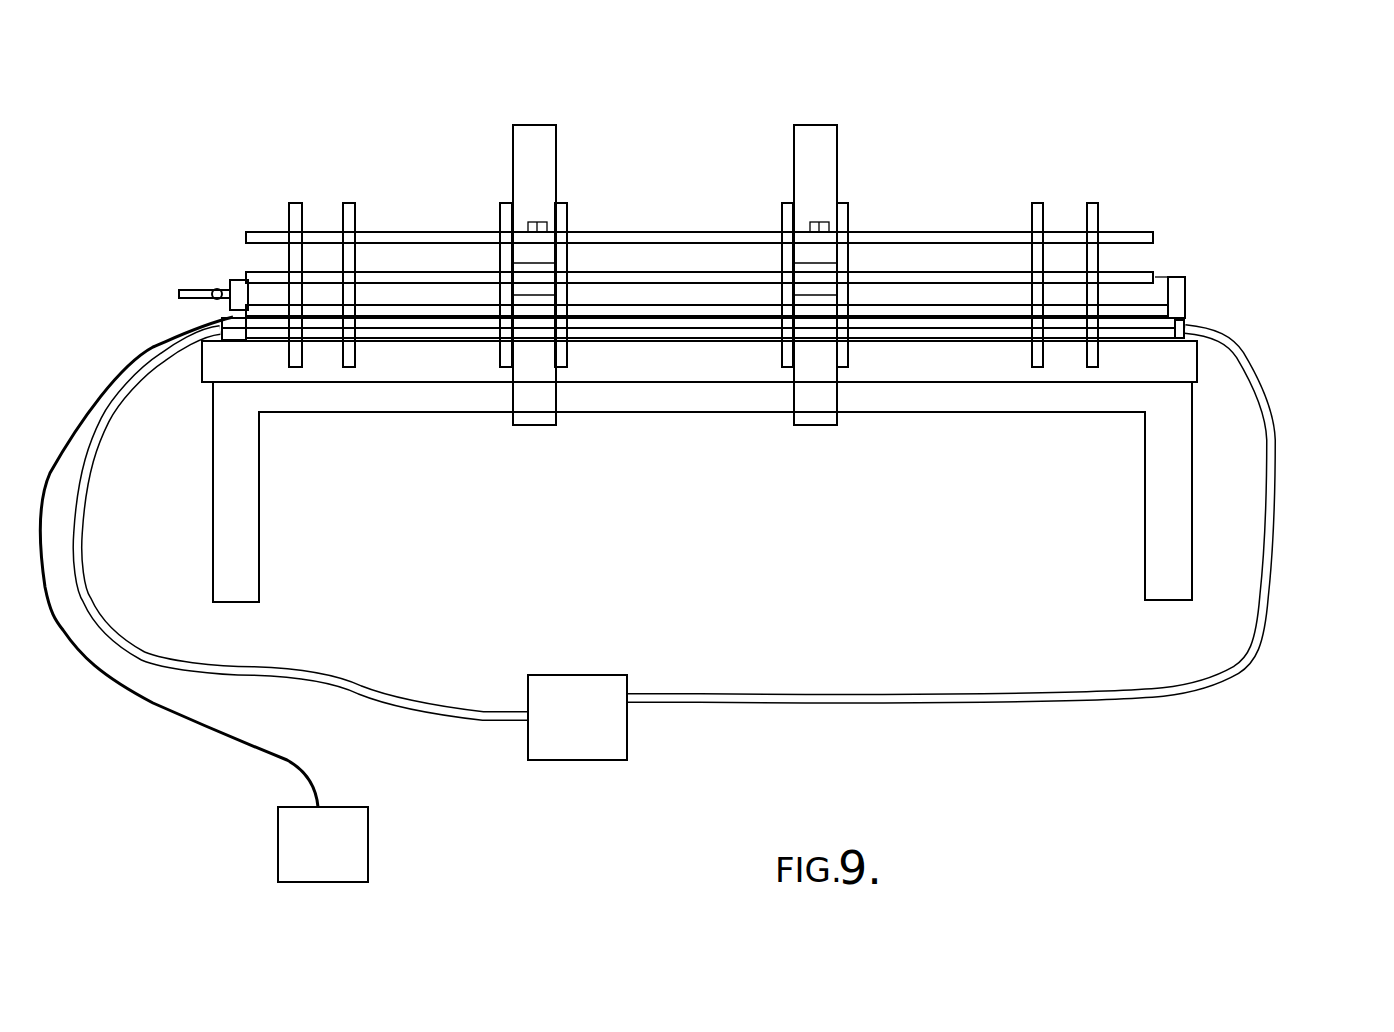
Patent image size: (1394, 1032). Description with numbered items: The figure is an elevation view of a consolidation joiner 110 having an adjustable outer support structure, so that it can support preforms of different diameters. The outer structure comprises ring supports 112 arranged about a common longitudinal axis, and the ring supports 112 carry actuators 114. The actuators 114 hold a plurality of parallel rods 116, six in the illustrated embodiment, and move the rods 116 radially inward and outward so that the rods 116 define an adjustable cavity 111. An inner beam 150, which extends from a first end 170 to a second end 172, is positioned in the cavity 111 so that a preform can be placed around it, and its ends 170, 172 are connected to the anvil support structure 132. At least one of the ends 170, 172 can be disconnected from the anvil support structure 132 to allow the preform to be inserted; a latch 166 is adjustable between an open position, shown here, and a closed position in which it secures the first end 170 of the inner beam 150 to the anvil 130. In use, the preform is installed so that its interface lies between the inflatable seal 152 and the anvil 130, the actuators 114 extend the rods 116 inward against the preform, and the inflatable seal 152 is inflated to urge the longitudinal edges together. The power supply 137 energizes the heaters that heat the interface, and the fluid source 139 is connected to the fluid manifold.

The consolidation joiner 110 is at (168, 128).
The adjustable cavity 111 is at (433, 266).
The ring supports 112 is at (296, 203).
The actuators 114 is at (538, 124).
The rods 116 is at (1150, 327).
The anvil 130 is at (1190, 317).
The anvil support structure 132 is at (1186, 333).
The power supply 137 is at (320, 882).
The fluid source 139 is at (560, 760).
The inner beam 150 is at (236, 281).
The inflatable seal 152 is at (230, 313).
The latch 166 is at (238, 277).
The first end 170 is at (185, 288).
The second end 172 is at (1190, 298).